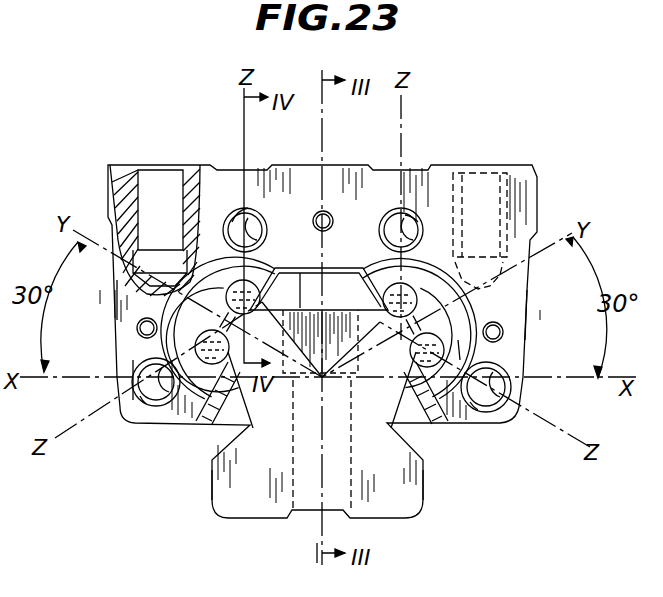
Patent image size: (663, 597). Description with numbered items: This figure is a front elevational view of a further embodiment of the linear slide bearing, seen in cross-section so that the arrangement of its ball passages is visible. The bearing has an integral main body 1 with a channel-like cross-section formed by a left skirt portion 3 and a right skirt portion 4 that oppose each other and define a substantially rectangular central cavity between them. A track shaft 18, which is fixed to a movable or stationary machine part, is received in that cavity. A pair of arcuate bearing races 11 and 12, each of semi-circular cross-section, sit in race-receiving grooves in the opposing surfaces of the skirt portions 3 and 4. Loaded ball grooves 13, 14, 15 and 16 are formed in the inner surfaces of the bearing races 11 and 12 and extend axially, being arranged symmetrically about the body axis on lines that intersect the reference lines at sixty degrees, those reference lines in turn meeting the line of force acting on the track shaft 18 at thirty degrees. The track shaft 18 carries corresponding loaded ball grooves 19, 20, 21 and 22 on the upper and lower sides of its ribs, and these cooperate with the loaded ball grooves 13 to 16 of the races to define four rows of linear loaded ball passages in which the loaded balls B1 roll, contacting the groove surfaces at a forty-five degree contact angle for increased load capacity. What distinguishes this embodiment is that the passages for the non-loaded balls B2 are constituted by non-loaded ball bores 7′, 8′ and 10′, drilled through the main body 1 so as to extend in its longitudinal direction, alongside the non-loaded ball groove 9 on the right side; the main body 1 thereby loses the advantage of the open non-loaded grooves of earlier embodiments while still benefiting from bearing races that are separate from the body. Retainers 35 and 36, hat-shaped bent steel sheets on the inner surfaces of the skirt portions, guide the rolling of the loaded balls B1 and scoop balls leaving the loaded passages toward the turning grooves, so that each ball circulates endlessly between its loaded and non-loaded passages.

The main body 1 is at (522, 164).
The left skirt portion 3 is at (116, 293).
The right skirt portion 4 is at (516, 314).
The non-loaded ball bore 7′ is at (232, 221).
The non-loaded ball bore 8′ is at (153, 402).
The non-loaded ball groove 9 is at (407, 214).
The non-loaded ball bore 10′ is at (490, 408).
The bearing race 11 is at (190, 269).
The bearing race 12 is at (455, 274).
The loaded ball groove 13 is at (228, 282).
The loaded ball groove 14 is at (130, 356).
The loaded ball groove 15 is at (412, 286).
The loaded ball groove 16 is at (455, 352).
The track shaft 18 is at (250, 497).
The loaded ball groove 19 is at (319, 289).
The loaded ball groove 20 is at (306, 410).
The loaded ball groove 21 is at (366, 300).
The loaded ball groove 22 is at (412, 360).
The retainer 35 is at (213, 418).
The retainer 36 is at (428, 408).
The loaded balls B1 is at (442, 344).
The non-loaded balls B2 is at (508, 384).